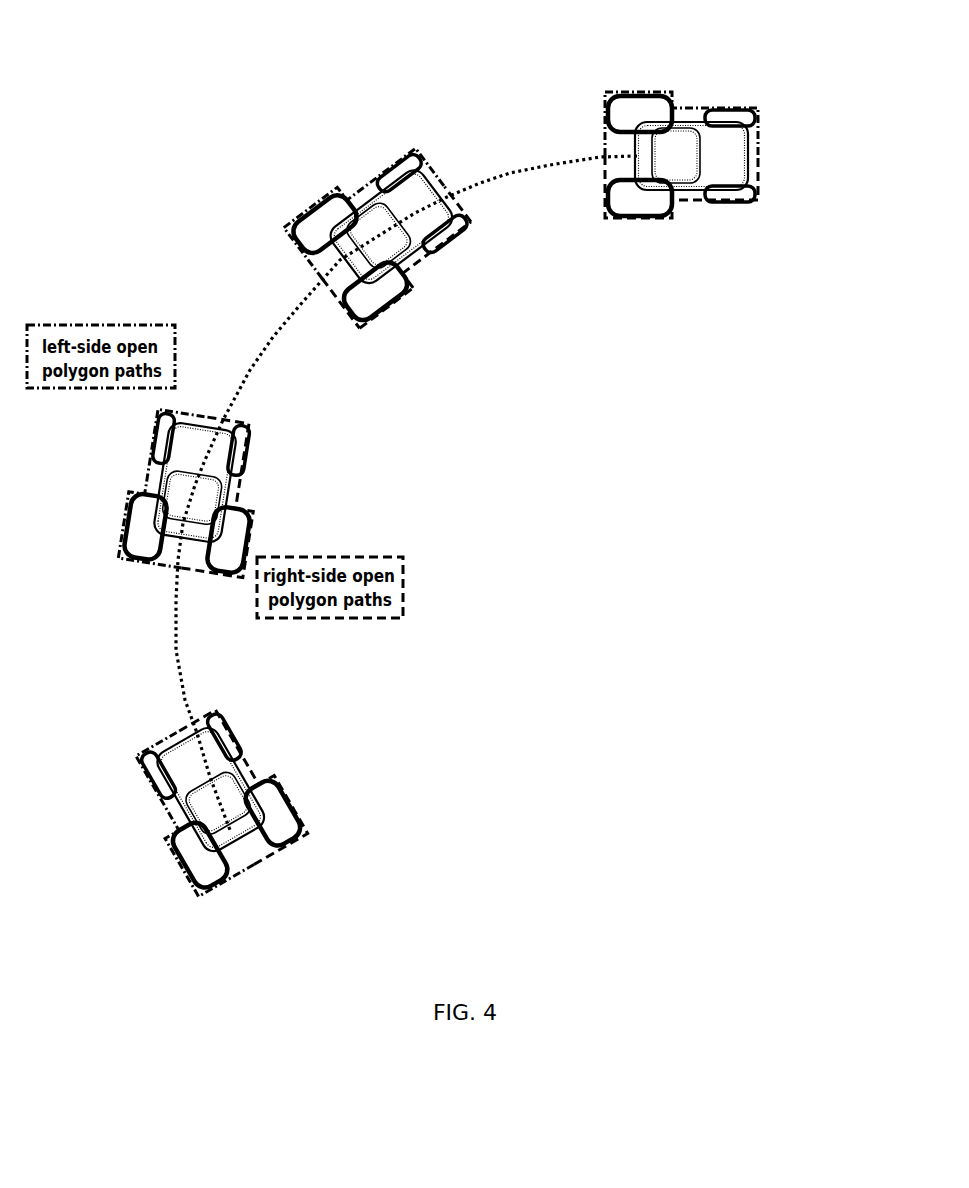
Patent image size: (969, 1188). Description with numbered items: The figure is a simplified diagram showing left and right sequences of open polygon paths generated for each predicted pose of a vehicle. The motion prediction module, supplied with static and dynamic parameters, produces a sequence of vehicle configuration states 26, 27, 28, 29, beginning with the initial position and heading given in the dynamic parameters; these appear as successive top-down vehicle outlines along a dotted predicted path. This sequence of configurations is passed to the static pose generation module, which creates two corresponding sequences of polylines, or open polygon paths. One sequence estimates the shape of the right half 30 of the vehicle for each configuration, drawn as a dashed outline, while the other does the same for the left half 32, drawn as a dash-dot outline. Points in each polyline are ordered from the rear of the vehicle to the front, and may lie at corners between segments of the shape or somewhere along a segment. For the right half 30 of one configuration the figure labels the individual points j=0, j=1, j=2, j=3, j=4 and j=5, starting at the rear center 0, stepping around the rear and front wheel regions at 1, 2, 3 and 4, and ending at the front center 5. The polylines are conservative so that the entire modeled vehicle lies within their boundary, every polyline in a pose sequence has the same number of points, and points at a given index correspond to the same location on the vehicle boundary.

The polyline point j= 0 is at (322, 278).
The polyline point j= 1 is at (362, 330).
The polyline point j= 2 is at (410, 287).
The polyline point j= 3 is at (403, 272).
The polyline point j= 4 is at (470, 222).
The polyline point j= 5 is at (447, 197).
The vehicle configuration state 26 is at (290, 792).
The vehicle configuration state 27 is at (117, 530).
The vehicle configuration state 28 is at (288, 220).
The vehicle configuration state 29 is at (705, 204).
The right half 30 is at (243, 452).
The left half 32 is at (125, 495).